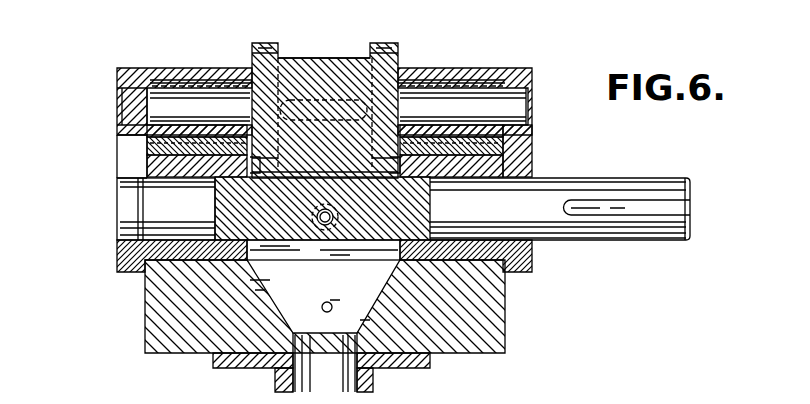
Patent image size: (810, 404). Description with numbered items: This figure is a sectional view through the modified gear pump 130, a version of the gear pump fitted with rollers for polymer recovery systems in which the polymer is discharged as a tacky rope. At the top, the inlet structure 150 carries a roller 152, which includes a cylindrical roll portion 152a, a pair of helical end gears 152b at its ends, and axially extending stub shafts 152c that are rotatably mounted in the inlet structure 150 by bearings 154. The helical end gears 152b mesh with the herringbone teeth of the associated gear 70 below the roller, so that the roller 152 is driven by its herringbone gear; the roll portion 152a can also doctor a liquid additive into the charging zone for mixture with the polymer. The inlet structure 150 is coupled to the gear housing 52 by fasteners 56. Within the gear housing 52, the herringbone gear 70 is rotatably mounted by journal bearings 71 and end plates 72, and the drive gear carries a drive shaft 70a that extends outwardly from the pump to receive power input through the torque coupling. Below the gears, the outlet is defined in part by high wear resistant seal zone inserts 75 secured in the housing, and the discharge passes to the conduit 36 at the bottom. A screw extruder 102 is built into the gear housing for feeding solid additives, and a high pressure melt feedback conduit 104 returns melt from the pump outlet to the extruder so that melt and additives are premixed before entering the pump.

The modified gear pump 130 is at (98, 72).
The inlet structure 150 is at (510, 68).
The roller 152 is at (327, 55).
The cylindrical roll portion 152a is at (293, 58).
The helical end gears 152b is at (252, 50).
The stub shafts 152c is at (128, 108).
The bearings 154 is at (172, 82).
The fasteners 56 is at (155, 150).
The journal bearings 71 is at (150, 170).
The herringbone gears 70 is at (375, 252).
The drive shaft 70a is at (648, 190).
The screw extruder 102 is at (316, 217).
The end plates 72 is at (128, 257).
The seal zone inserts 75 is at (305, 262).
The high pressure melt feedback conduit 104 is at (316, 318).
The gear housing 52 is at (493, 311).
The conduit 36 is at (373, 388).